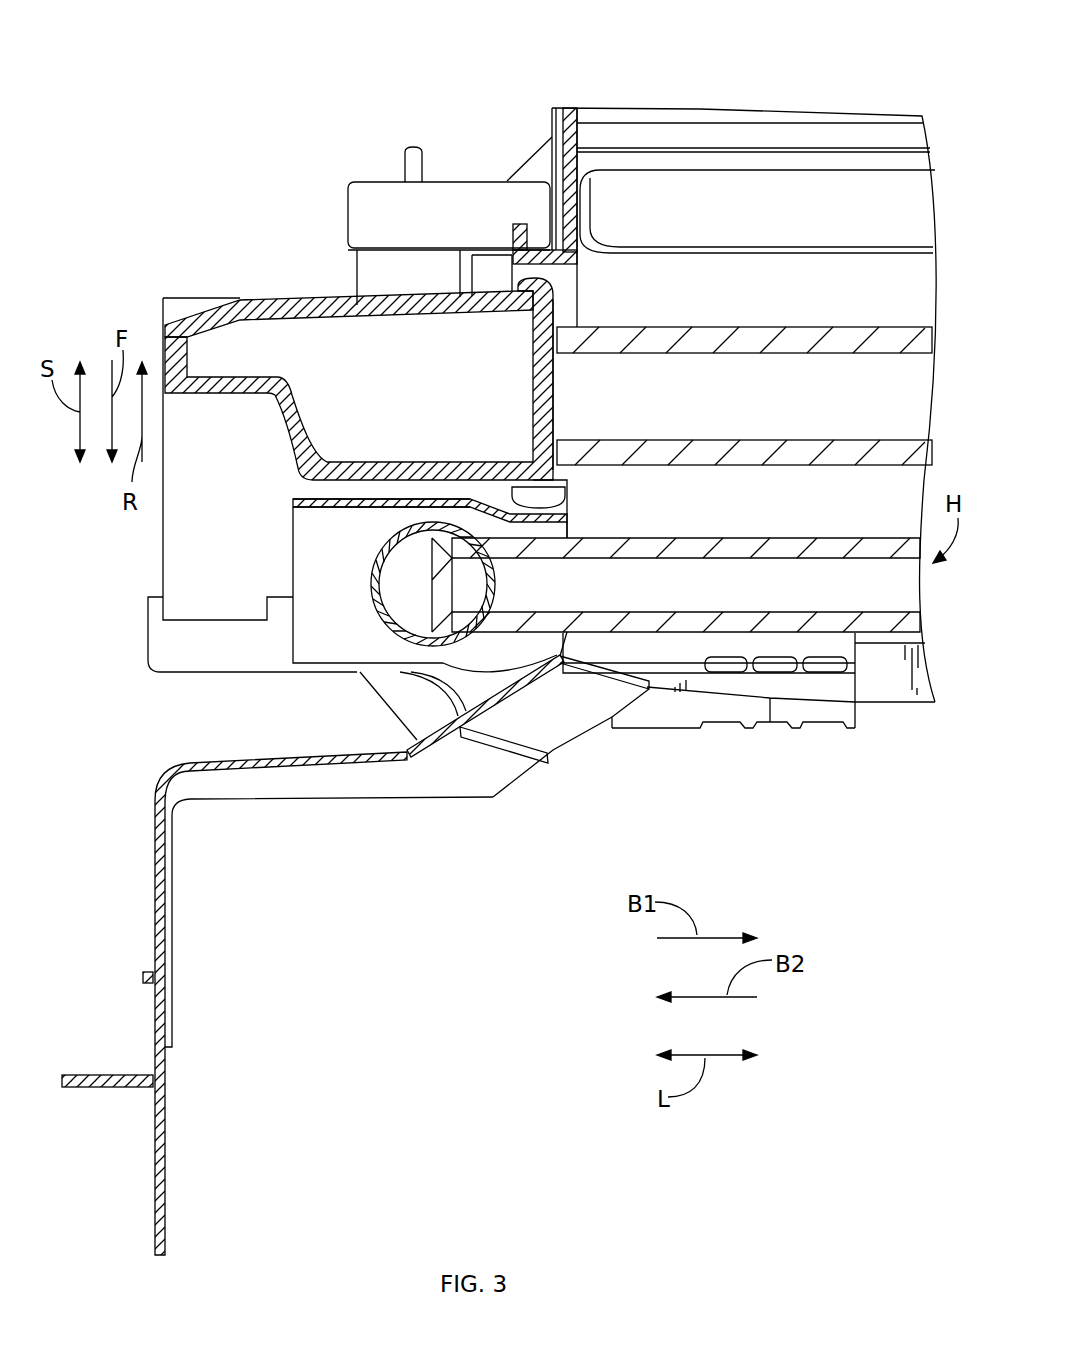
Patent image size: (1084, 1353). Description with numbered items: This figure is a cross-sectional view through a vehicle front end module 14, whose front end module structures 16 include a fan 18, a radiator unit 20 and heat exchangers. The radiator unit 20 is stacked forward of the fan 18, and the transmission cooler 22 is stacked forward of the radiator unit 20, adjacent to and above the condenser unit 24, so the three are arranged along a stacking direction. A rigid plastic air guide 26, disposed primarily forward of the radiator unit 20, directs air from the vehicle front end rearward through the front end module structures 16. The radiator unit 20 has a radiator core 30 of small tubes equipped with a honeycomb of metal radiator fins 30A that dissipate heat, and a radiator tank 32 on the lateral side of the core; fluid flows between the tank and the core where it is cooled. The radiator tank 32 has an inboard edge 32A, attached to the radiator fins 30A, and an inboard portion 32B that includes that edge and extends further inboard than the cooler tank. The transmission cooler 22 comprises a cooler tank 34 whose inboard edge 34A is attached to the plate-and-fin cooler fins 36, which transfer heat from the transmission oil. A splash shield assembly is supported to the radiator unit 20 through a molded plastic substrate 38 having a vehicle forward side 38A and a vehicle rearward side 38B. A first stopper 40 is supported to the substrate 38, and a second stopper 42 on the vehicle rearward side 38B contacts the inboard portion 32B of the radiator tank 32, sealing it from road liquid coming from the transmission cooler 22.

The front end module 14 is at (704, 46).
The front end module structures 16 is at (203, 230).
The fan 18 is at (708, 246).
The radiator unit 20 is at (287, 288).
The transmission cooler 22 is at (371, 632).
The condenser unit 24 is at (884, 678).
The air guide 26 is at (153, 893).
The radiator core 30 is at (790, 320).
The radiator fins 30A is at (790, 452).
The radiator tank 32 is at (195, 305).
The inboard edge 32A is at (556, 306).
The inboard portion 32B is at (537, 462).
The cooler tank 34 is at (373, 571).
The inboard edge 34A is at (497, 583).
The cooler fins 36 is at (778, 620).
The substrate 38 is at (297, 503).
The vehicle forward side 38A is at (340, 510).
The vehicle rearward side 38B is at (333, 498).
The first stopper 40 is at (327, 618).
The second stopper 42 is at (545, 502).